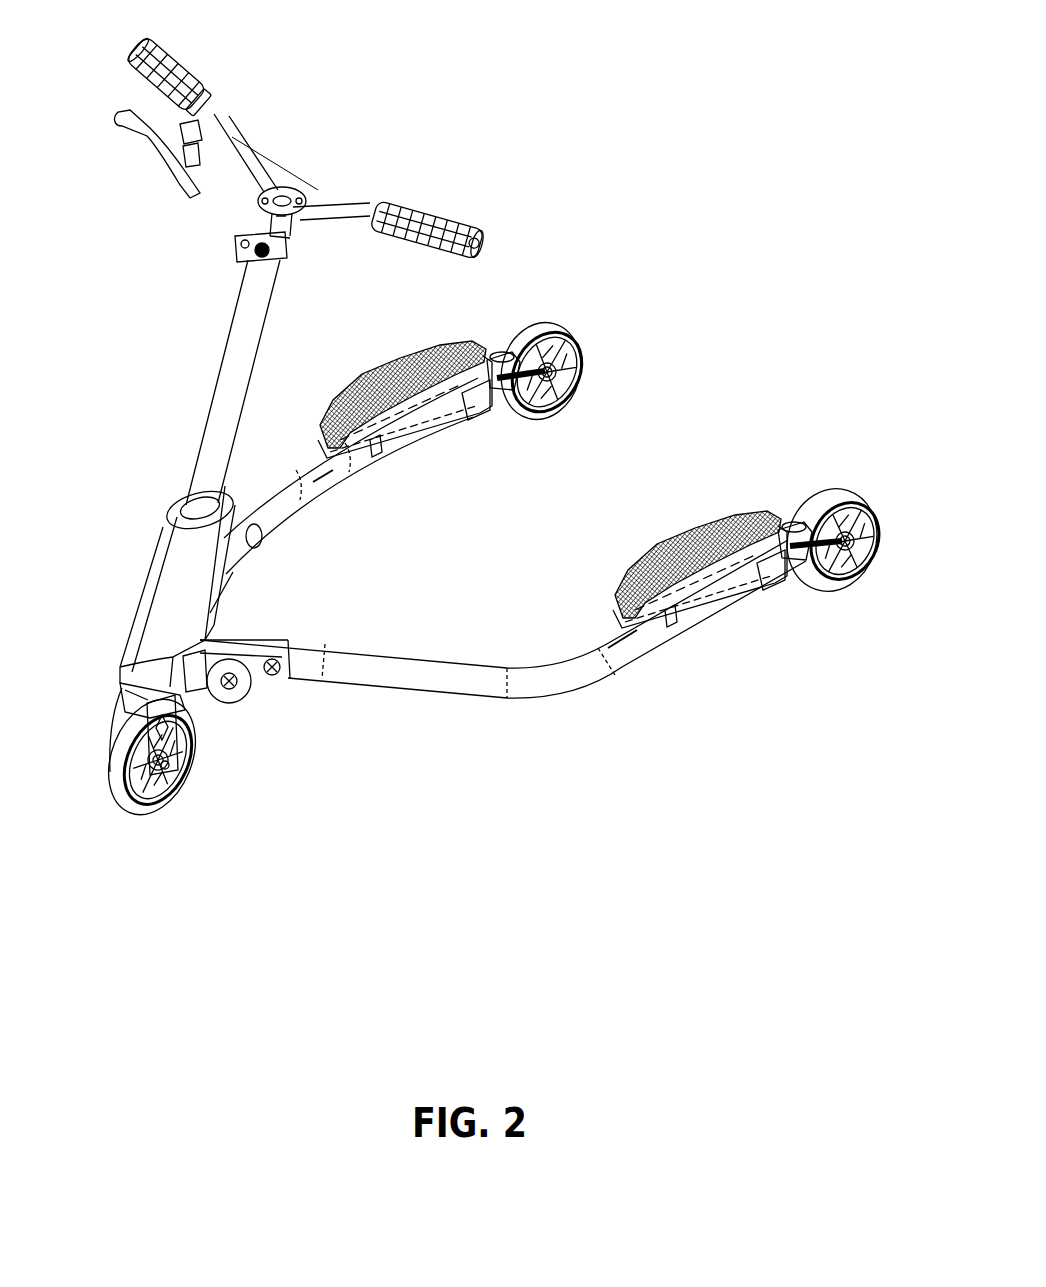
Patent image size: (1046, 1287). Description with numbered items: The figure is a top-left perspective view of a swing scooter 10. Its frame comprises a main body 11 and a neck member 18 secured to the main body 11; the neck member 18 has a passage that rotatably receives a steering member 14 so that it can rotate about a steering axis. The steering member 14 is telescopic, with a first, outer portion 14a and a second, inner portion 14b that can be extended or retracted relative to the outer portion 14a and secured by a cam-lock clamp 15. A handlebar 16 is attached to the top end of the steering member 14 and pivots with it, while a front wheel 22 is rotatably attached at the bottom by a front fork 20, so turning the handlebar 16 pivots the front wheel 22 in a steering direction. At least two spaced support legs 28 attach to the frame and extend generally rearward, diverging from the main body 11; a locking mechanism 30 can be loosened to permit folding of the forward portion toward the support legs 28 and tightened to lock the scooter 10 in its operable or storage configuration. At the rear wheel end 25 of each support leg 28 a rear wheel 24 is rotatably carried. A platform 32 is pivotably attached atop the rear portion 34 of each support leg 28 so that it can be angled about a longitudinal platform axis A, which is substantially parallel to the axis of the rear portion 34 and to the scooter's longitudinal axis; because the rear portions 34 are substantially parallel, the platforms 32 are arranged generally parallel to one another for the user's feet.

The swing scooter 10 is at (640, 133).
The main body 11 is at (228, 623).
The steering member 14 is at (78, 216).
The first, outer portion 14a is at (233, 355).
The second, inner portion 14b is at (268, 232).
The cam-lock clamp 15 is at (252, 253).
The handlebar 16 is at (265, 155).
The neck member 18 is at (149, 567).
The front fork 20 is at (132, 702).
The front wheel 22 is at (178, 790).
The rear wheel 24 is at (545, 325).
The rear wheel end 25 is at (461, 447).
The support leg 28 is at (279, 508).
The locking mechanism 30 is at (235, 685).
The platform 32 is at (459, 350).
The rear portion 34 is at (681, 652).
The longitudinal platform axis A is at (330, 468).